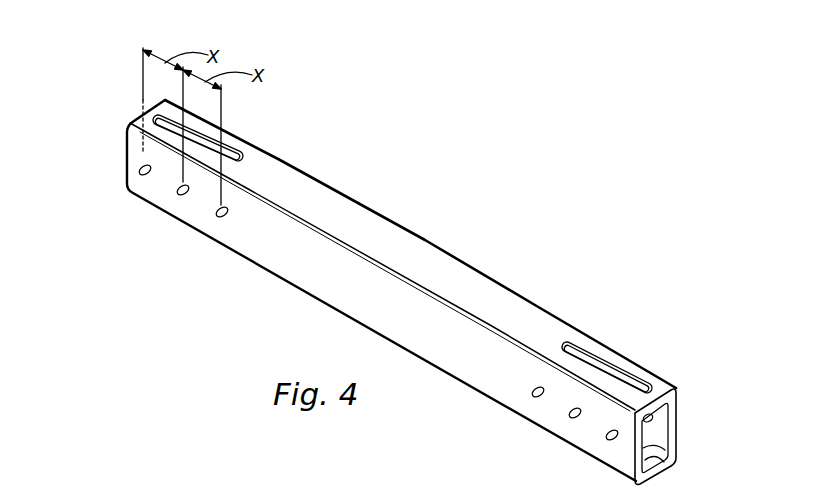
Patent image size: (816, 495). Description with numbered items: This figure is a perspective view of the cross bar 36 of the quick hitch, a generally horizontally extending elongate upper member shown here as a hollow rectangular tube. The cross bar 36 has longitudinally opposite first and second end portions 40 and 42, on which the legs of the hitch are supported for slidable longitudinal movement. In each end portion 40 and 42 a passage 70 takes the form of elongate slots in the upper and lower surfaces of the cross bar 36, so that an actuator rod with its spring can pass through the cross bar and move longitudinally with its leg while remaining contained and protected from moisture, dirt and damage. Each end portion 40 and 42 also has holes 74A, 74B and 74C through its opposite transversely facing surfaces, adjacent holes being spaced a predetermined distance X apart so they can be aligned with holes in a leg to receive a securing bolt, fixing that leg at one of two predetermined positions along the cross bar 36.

The cross bar 36 is at (428, 237).
The first end portion 40 is at (138, 118).
The second end portion 42 is at (647, 373).
The passage 70 is at (238, 157).
The hole 74A is at (139, 172).
The hole 74B is at (180, 196).
The hole 74C is at (218, 218).